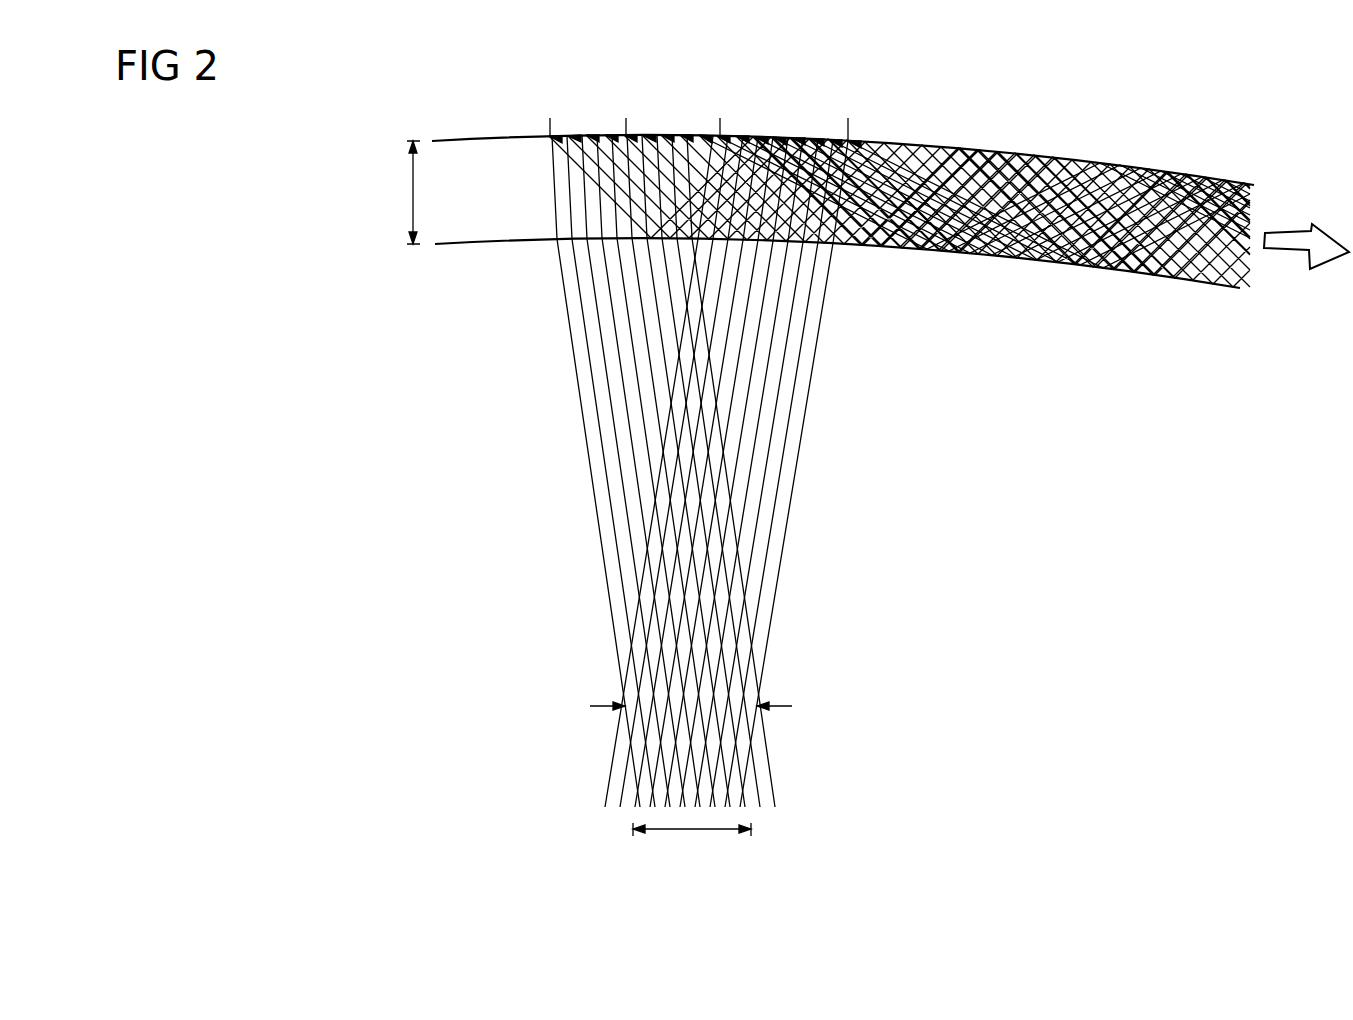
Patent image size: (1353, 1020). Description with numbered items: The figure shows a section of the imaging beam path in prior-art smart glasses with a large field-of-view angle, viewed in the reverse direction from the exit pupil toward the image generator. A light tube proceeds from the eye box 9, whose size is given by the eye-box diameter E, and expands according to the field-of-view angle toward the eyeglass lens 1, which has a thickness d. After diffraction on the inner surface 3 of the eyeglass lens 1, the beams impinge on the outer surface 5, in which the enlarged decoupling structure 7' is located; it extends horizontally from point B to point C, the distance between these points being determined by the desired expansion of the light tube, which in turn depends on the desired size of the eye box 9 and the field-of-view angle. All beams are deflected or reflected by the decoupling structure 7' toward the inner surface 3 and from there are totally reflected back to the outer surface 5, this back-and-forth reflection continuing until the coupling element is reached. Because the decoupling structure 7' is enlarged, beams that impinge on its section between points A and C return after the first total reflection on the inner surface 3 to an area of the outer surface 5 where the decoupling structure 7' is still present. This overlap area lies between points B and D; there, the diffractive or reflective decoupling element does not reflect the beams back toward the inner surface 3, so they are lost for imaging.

The eyeglass lens 1 is at (890, 187).
The inner surface 3 is at (497, 246).
The outer surface 5 is at (475, 137).
The decoupling structure 7' is at (705, 103).
The eye box 9 is at (600, 706).
The thickness of the eyeglass lens d is at (412, 193).
The point A is at (626, 128).
The point B is at (848, 130).
The point C is at (550, 128).
The point D is at (720, 128).
The eye-box diameter E is at (695, 830).